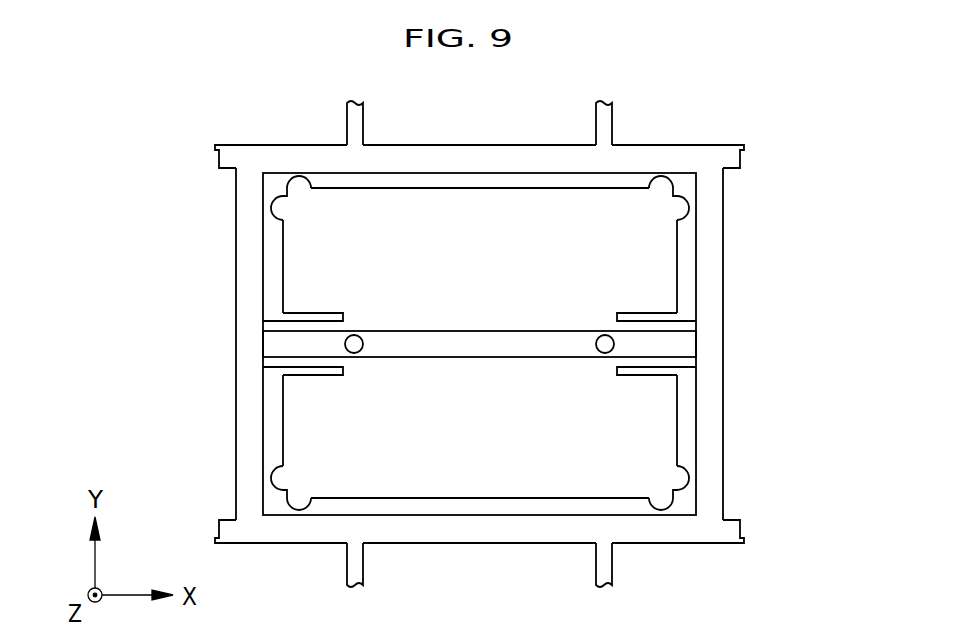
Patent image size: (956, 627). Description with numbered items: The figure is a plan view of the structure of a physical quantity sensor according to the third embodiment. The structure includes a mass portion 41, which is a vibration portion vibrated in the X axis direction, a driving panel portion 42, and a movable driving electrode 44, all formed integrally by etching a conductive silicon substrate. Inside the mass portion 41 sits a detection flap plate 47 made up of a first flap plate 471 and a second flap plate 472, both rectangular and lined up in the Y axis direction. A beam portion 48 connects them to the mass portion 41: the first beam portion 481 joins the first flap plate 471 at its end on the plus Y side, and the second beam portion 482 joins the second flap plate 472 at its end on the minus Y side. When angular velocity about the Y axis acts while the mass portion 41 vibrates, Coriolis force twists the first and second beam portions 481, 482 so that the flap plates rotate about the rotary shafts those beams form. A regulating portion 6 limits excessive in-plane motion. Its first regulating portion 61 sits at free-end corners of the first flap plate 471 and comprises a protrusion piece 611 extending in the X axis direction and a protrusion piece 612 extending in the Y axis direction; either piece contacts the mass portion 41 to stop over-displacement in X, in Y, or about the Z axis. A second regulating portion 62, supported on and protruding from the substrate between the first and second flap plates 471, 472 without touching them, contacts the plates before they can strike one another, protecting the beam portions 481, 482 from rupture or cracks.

The mass portion 41 is at (710, 193).
The driving panel portion 42 is at (222, 152).
The movable driving electrode 44 is at (363, 113).
The detection flap plate 47 is at (480, 341).
The first flap plate 471 is at (477, 216).
The second flap plate 472 is at (481, 478).
The beam portion 48 is at (546, 341).
The first beam portion 481 is at (677, 327).
The second beam portion 482 is at (677, 360).
The regulating portion 6 is at (475, 341).
The first regulating portion 61 is at (280, 479).
The protrusion piece 611 is at (280, 211).
The protrusion piece 612 is at (300, 183).
The second regulating portion 62 is at (354, 336).